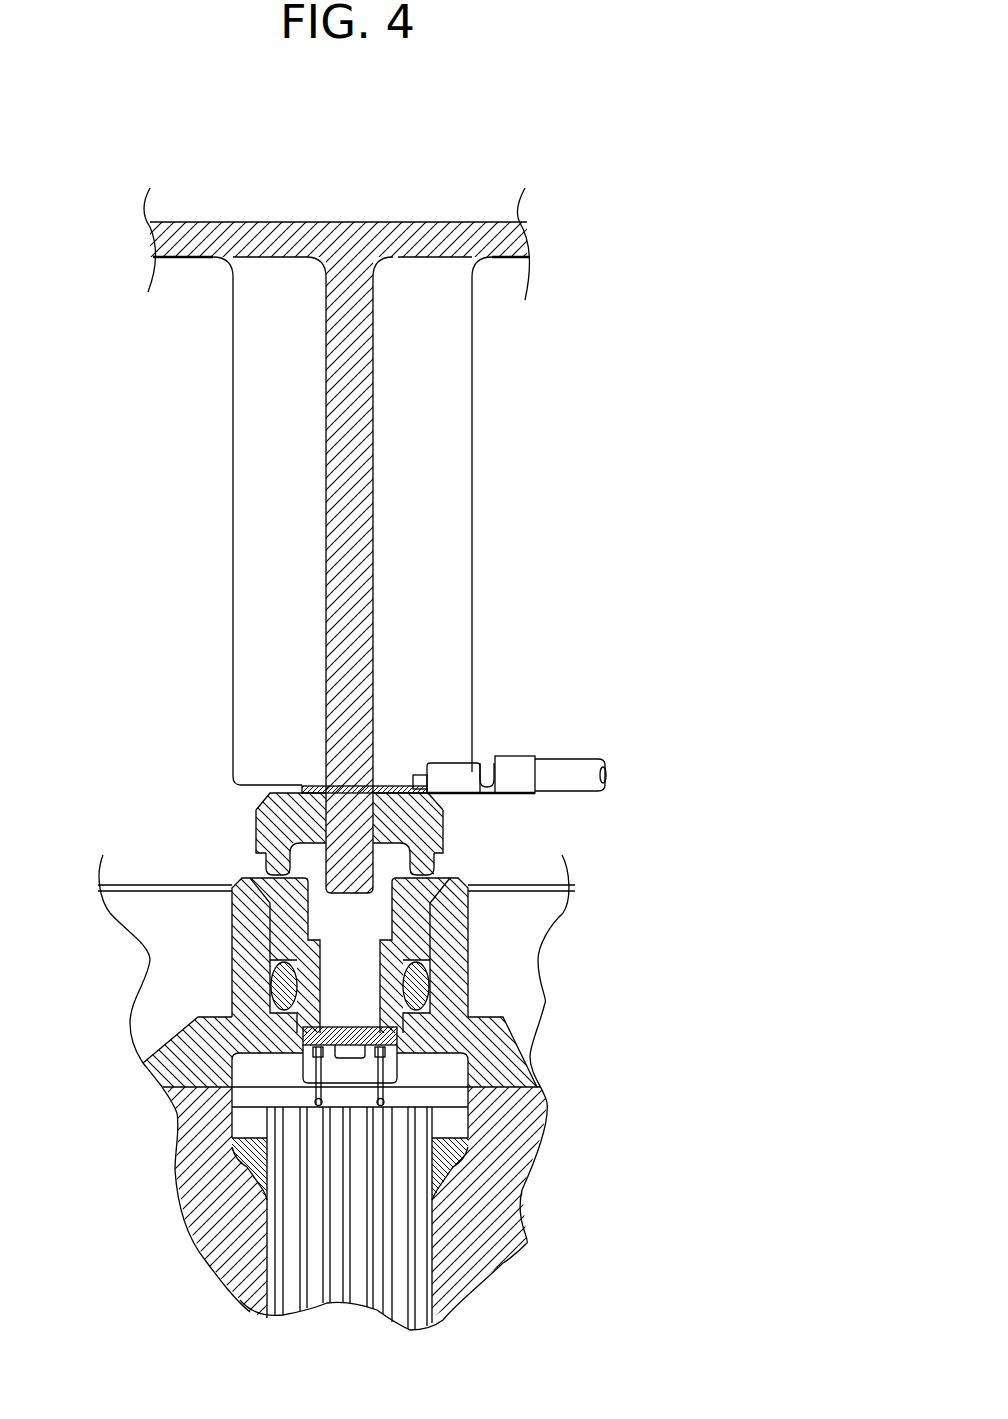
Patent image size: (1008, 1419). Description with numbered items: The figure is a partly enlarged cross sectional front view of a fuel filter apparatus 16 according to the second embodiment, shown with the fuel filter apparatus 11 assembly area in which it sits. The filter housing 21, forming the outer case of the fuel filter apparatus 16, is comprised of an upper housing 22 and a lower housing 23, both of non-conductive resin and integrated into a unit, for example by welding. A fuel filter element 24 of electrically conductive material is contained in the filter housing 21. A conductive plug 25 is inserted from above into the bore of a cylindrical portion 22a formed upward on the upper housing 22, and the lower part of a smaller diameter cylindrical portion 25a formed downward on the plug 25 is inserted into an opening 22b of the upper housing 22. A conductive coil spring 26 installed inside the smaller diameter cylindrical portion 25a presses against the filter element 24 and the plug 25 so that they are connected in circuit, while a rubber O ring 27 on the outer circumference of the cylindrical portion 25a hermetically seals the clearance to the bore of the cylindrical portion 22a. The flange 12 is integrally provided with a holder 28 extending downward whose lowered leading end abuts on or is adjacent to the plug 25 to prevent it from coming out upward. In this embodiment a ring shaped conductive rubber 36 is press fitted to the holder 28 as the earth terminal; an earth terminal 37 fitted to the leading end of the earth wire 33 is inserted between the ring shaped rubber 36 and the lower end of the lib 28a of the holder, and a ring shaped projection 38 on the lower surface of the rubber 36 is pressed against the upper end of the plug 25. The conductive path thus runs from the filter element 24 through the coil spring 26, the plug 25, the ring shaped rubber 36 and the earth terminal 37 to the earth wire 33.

The oxygen sensor element assembly 11 is at (560, 205).
The flange 12 is at (255, 222).
The fuel filter apparatus 16 is at (188, 1272).
The filter housing 21 is at (560, 1097).
The upper housing 22 is at (490, 1048).
The cylindrical portion 22a is at (468, 978).
The opening 22b is at (300, 1073).
The lower housing 23 is at (467, 1253).
The fuel filter element 24 is at (385, 1197).
The conductive plug 25 is at (467, 943).
The smaller diameter cylindrical portion 25a is at (305, 1018).
The conductive coil spring 26 is at (392, 1097).
The rubber O ring 27 is at (270, 990).
The holder 28 is at (380, 478).
The lib 28a is at (232, 775).
The earth wire 33 is at (568, 758).
The ring shaped conductive rubber 36 is at (443, 825).
The earth terminal 37 is at (400, 784).
The ring shaped projection 38 is at (437, 862).